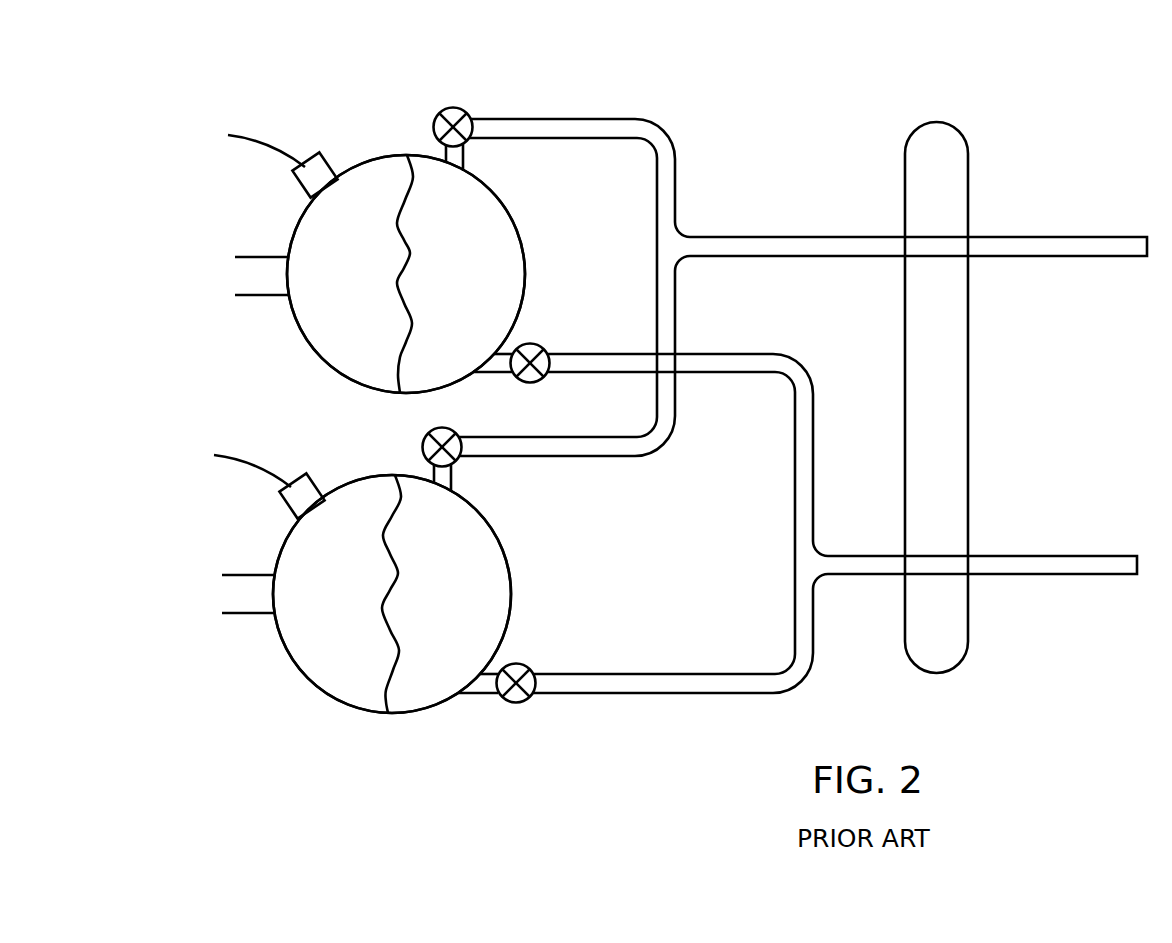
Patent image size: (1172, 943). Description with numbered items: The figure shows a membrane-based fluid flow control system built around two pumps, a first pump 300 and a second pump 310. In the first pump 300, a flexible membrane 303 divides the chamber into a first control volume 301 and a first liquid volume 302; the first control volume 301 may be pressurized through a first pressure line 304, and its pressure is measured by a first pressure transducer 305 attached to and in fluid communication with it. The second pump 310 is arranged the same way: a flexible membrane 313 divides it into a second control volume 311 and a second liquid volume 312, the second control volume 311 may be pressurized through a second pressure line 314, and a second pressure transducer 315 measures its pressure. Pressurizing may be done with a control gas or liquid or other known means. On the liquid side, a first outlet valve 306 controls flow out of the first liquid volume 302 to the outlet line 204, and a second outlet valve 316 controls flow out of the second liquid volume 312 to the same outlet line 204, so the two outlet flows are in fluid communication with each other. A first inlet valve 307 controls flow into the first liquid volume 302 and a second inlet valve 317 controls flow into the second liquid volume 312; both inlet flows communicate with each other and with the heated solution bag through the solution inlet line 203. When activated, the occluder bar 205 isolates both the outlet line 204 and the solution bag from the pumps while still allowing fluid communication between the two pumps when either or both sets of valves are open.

The solution inlet line 203 is at (1020, 237).
The outlet line 204 is at (1012, 556).
The occluder bar 205 is at (942, 121).
The first pump 300 is at (416, 738).
The first control volume 301 is at (357, 658).
The first liquid volume 302 is at (469, 658).
The flexible membrane 303 is at (383, 604).
The first pressure line 304 is at (230, 596).
The first pressure transducer 305 is at (283, 508).
The first outlet valve 306 is at (517, 703).
The first inlet valve 307 is at (423, 446).
The second pump 310 is at (397, 62).
The second control volume 311 is at (375, 334).
The second liquid volume 312 is at (485, 334).
The flexible membrane 313 is at (398, 275).
The second pressure line 314 is at (233, 275).
The second pressure transducer 315 is at (297, 188).
The second outlet valve 316 is at (530, 383).
The second inlet valve 317 is at (462, 107).